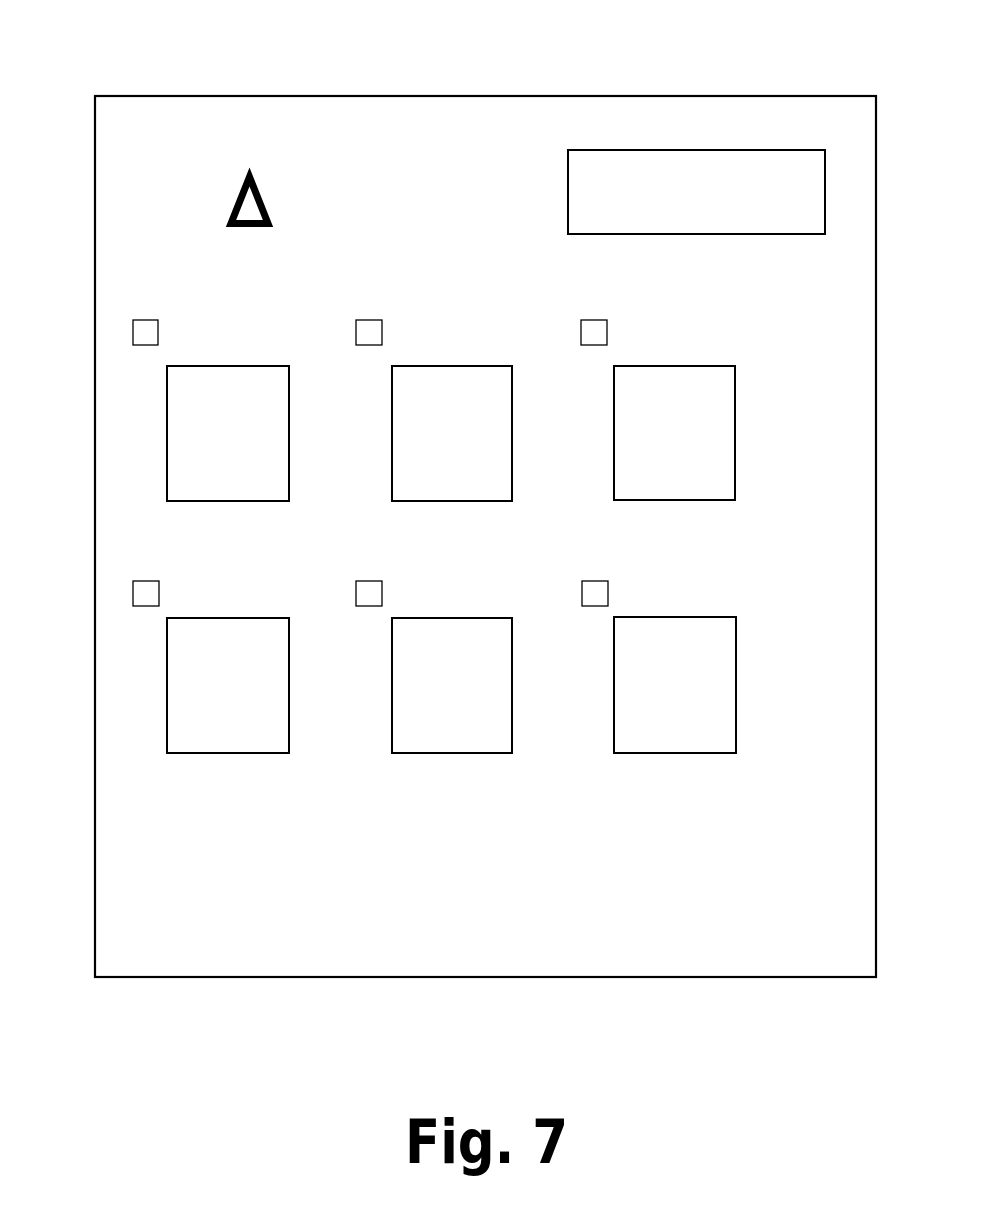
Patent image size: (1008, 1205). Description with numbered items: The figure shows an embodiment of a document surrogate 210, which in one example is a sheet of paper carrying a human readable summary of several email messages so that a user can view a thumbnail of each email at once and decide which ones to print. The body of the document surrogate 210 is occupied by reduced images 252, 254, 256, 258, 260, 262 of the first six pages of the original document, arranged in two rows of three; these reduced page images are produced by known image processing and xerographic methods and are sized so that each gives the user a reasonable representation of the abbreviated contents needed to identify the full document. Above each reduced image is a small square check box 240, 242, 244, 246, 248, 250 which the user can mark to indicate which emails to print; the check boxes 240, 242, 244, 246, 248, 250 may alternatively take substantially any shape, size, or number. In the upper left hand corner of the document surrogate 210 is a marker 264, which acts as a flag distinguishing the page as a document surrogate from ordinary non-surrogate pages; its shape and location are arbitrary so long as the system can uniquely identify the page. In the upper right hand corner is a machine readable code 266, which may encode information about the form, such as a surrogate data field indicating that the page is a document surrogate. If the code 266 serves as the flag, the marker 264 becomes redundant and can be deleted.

The document surrogate 210 is at (452, 498).
The marker 264 is at (125, 145).
The machine readable code 266 is at (590, 150).
The check box 240 is at (132, 320).
The check box 242 is at (356, 320).
The check box 244 is at (580, 320).
The check box 246 is at (132, 581).
The check box 248 is at (356, 581).
The check box 250 is at (581, 581).
The reduced image 252 is at (168, 434).
The reduced image 254 is at (392, 408).
The reduced image 256 is at (613, 408).
The reduced image 258 is at (168, 663).
The reduced image 260 is at (392, 663).
The reduced image 262 is at (614, 663).